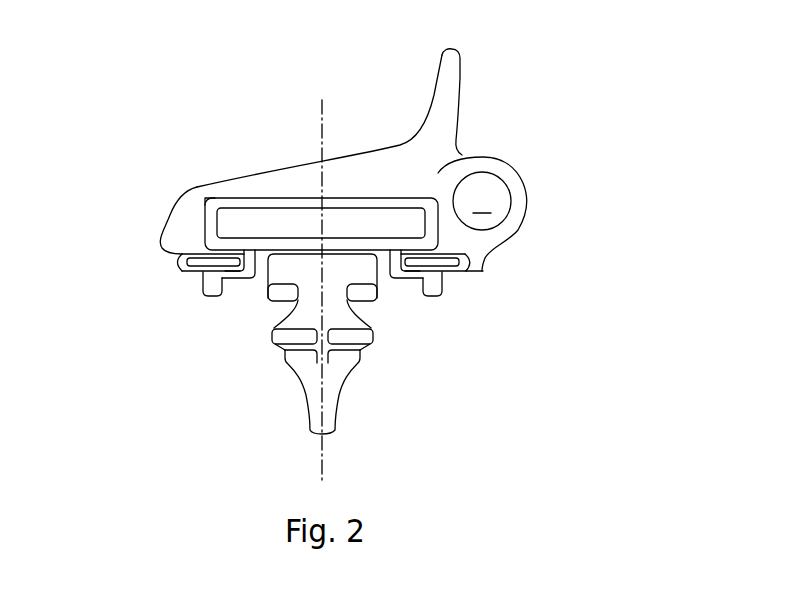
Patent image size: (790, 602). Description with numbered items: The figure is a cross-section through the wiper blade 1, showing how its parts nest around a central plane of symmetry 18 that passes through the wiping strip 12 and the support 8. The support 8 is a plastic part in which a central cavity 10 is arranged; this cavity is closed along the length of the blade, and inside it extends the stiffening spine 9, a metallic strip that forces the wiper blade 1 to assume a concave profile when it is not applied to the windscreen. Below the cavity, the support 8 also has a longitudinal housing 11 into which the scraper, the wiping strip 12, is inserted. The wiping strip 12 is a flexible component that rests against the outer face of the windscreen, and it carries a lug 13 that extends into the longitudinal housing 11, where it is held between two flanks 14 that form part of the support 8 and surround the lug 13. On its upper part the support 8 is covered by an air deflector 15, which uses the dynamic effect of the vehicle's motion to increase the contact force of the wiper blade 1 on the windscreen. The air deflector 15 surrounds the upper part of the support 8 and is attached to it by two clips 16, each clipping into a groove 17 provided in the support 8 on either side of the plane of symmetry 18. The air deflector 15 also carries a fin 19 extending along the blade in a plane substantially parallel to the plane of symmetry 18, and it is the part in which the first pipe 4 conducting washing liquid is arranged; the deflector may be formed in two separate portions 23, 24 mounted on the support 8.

The wiper blade 1 is at (540, 392).
The first pipe 4 is at (482, 201).
The support 8 is at (251, 392).
The stiffening spine 9 is at (267, 230).
The central cavity 10 is at (198, 191).
The longitudinal housing 11 is at (386, 294).
The wiping strip 12 is at (291, 395).
The lug 13 is at (352, 230).
The flanks 14 is at (288, 300).
The air deflector 15 is at (468, 138).
The clips 16 is at (240, 264).
The groove 17 is at (213, 292).
The plane of symmetry 18 is at (323, 463).
The fin 19 is at (448, 83).
The separate portion 23 is at (462, 155).
The separate portion 24 is at (610, 168).